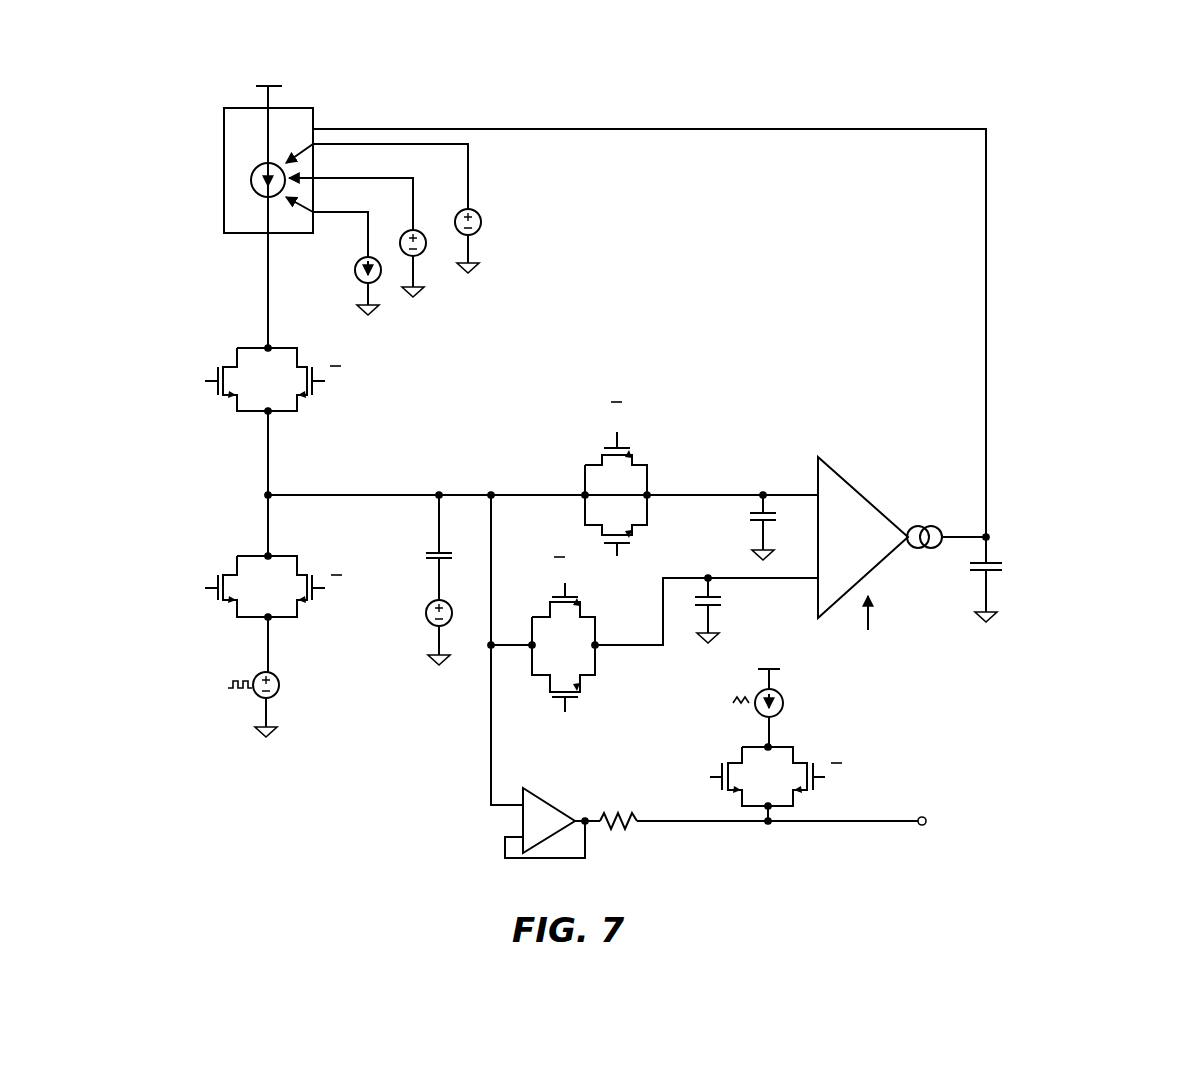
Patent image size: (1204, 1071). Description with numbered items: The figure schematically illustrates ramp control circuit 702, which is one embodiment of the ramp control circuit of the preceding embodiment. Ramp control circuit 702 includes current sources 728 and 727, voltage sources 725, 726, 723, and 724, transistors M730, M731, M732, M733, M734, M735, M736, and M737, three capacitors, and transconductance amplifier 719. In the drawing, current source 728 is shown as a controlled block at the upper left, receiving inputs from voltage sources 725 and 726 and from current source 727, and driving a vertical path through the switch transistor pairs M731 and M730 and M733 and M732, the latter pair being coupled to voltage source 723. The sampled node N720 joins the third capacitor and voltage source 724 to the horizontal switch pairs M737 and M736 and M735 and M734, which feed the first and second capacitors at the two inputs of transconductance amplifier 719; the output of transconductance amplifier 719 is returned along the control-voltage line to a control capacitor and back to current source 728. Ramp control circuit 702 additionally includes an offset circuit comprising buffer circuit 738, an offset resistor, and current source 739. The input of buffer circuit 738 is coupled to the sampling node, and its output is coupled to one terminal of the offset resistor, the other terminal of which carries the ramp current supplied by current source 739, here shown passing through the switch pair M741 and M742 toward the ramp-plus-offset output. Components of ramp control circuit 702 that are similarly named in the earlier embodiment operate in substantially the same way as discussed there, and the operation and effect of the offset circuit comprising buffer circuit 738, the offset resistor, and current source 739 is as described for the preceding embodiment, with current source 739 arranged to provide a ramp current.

The ramp control circuit 702 is at (1024, 100).
The transconductance amplifier 719 is at (855, 480).
The voltage source 723 is at (278, 694).
The voltage source 724 is at (425, 617).
The voltage source 725 is at (482, 226).
The voltage source 726 is at (420, 258).
The current source 727 is at (375, 284).
The current source 728 is at (224, 227).
The buffer circuit 738 is at (520, 858).
The current source 739 is at (784, 700).
The transistor M730 is at (300, 396).
The transistor M731 is at (233, 396).
The transistor M732 is at (300, 575).
The transistor M733 is at (230, 575).
The transistor M734 is at (625, 692).
The transistor M735 is at (548, 605).
The transistor M736 is at (640, 530).
The transistor M737 is at (598, 460).
The switch transistor controlled by S2 M741 is at (740, 758).
The switch transistor controlled by S2-bar M742 is at (800, 760).
The sampling node Vsmpl / output node N720 is at (437, 492).